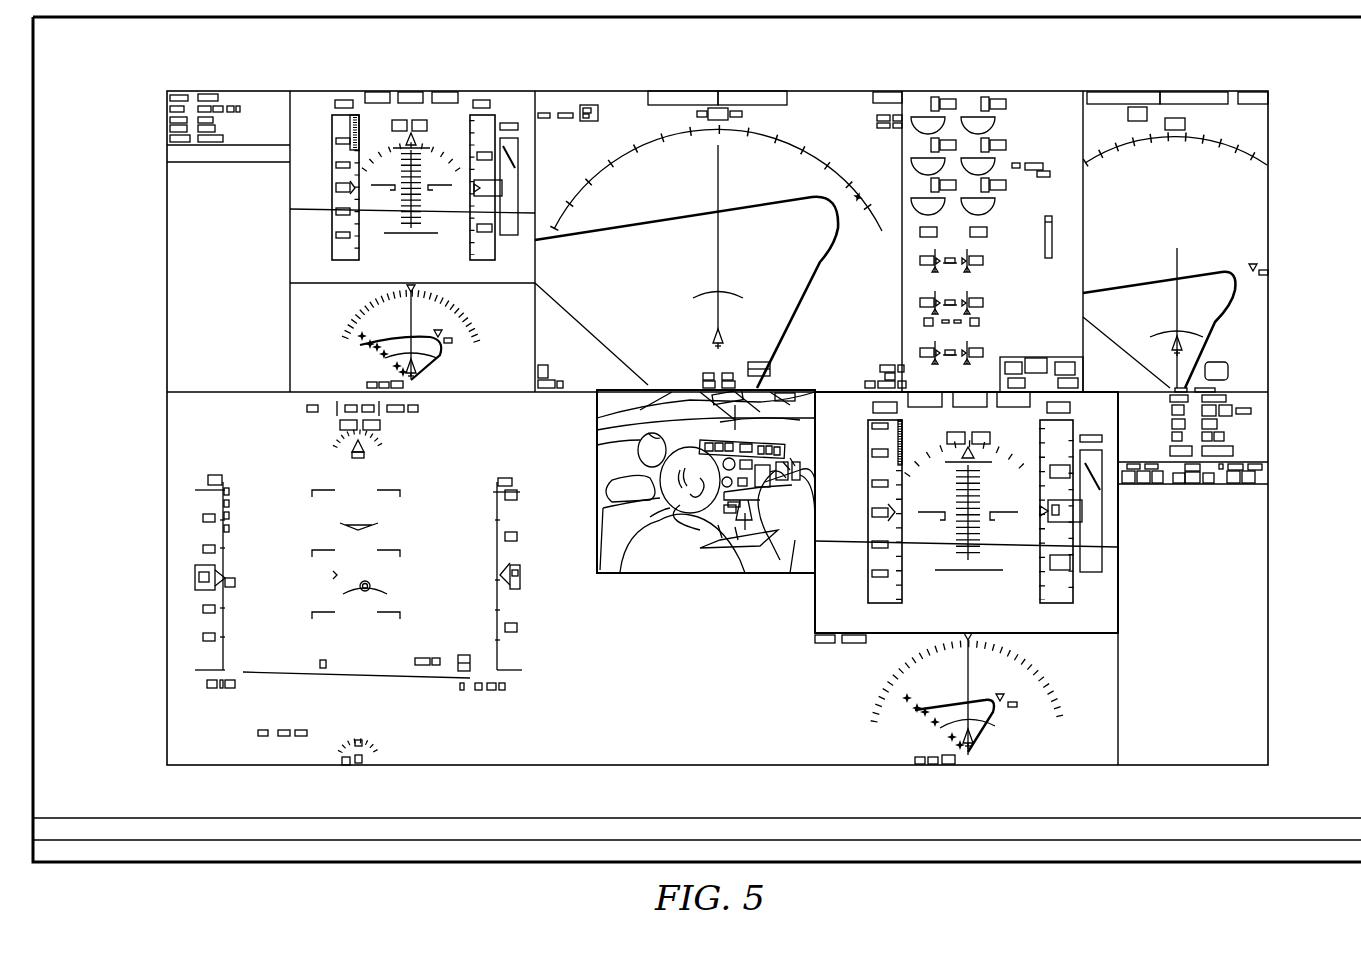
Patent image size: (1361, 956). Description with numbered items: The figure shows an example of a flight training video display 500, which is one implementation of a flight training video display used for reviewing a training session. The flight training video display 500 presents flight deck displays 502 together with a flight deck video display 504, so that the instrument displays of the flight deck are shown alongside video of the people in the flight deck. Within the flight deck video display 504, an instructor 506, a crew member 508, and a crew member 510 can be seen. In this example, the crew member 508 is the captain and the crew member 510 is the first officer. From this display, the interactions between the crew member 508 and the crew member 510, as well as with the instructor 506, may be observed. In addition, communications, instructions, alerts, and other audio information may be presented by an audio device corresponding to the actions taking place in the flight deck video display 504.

The flight training video display 500 is at (728, 69).
The flight deck displays 502 is at (316, 108).
The flight deck video display 504 is at (738, 572).
The instructor 506 is at (651, 560).
The crew member 508 is at (650, 440).
The crew member 510 is at (815, 470).